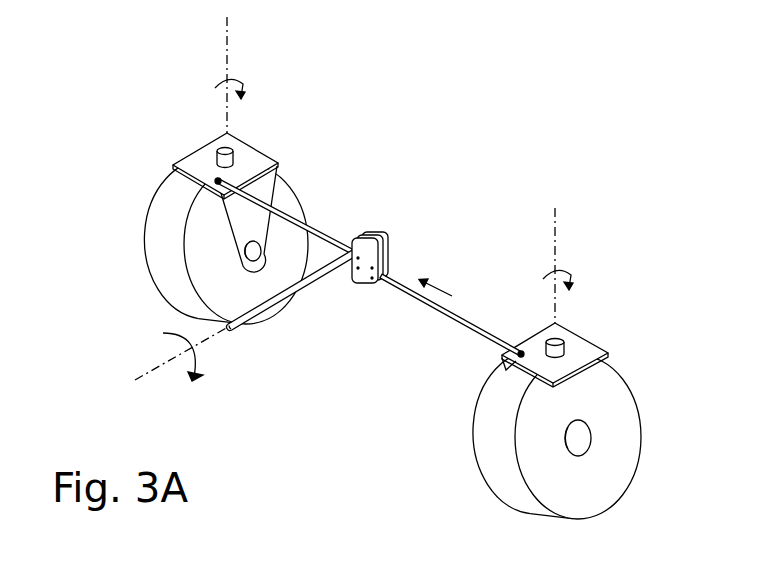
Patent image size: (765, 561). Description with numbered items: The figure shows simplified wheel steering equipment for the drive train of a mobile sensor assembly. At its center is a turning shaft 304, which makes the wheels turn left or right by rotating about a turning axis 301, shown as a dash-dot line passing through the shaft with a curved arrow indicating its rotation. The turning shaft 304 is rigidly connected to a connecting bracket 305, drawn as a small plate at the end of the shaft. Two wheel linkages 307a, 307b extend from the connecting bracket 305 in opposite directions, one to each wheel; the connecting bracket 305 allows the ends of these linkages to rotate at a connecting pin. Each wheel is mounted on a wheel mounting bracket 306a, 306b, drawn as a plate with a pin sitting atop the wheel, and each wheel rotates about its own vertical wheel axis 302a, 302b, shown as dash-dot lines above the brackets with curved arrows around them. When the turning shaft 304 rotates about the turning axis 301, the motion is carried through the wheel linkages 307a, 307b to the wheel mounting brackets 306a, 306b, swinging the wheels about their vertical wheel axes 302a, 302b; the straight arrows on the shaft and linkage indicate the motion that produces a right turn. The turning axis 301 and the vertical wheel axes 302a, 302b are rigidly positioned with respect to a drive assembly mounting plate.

The turning axis 301 is at (150, 362).
The vertical wheel axis 302a is at (230, 42).
The vertical wheel axis 302b is at (568, 235).
The turning shaft 304 is at (307, 298).
The connecting bracket 305 is at (378, 227).
The wheel mounting bracket 306a is at (255, 147).
The wheel mounting bracket 306b is at (590, 332).
The wheel linkage 307a is at (322, 230).
The wheel linkage 307b is at (452, 323).